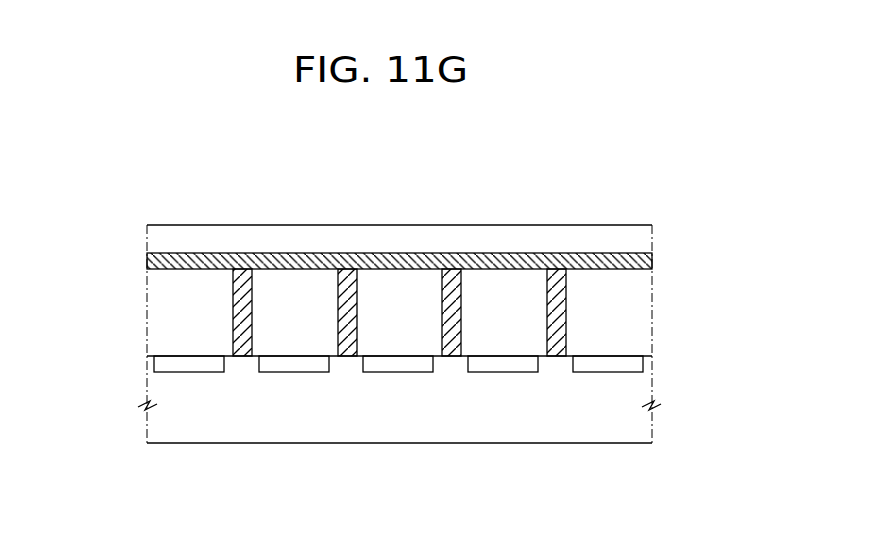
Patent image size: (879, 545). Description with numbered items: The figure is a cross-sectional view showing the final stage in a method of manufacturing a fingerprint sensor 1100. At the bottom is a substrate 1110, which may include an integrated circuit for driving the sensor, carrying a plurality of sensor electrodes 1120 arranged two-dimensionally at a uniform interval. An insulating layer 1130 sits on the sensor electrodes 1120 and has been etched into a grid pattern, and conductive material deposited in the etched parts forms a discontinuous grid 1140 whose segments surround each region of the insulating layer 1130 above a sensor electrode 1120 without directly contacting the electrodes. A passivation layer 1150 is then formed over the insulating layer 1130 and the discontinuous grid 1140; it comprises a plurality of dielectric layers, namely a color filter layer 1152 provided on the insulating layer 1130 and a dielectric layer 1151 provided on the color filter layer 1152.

The fingerprint sensor 1100 is at (160, 200).
The substrate 1110 is at (657, 411).
The sensor electrodes 1120 is at (595, 363).
The insulating layer 1130 is at (645, 298).
The discontinuous grid 1140 is at (558, 326).
The passivation layer 1150 is at (738, 223).
The dielectric layer 1151 is at (645, 233).
The color filter layer 1152 is at (645, 262).